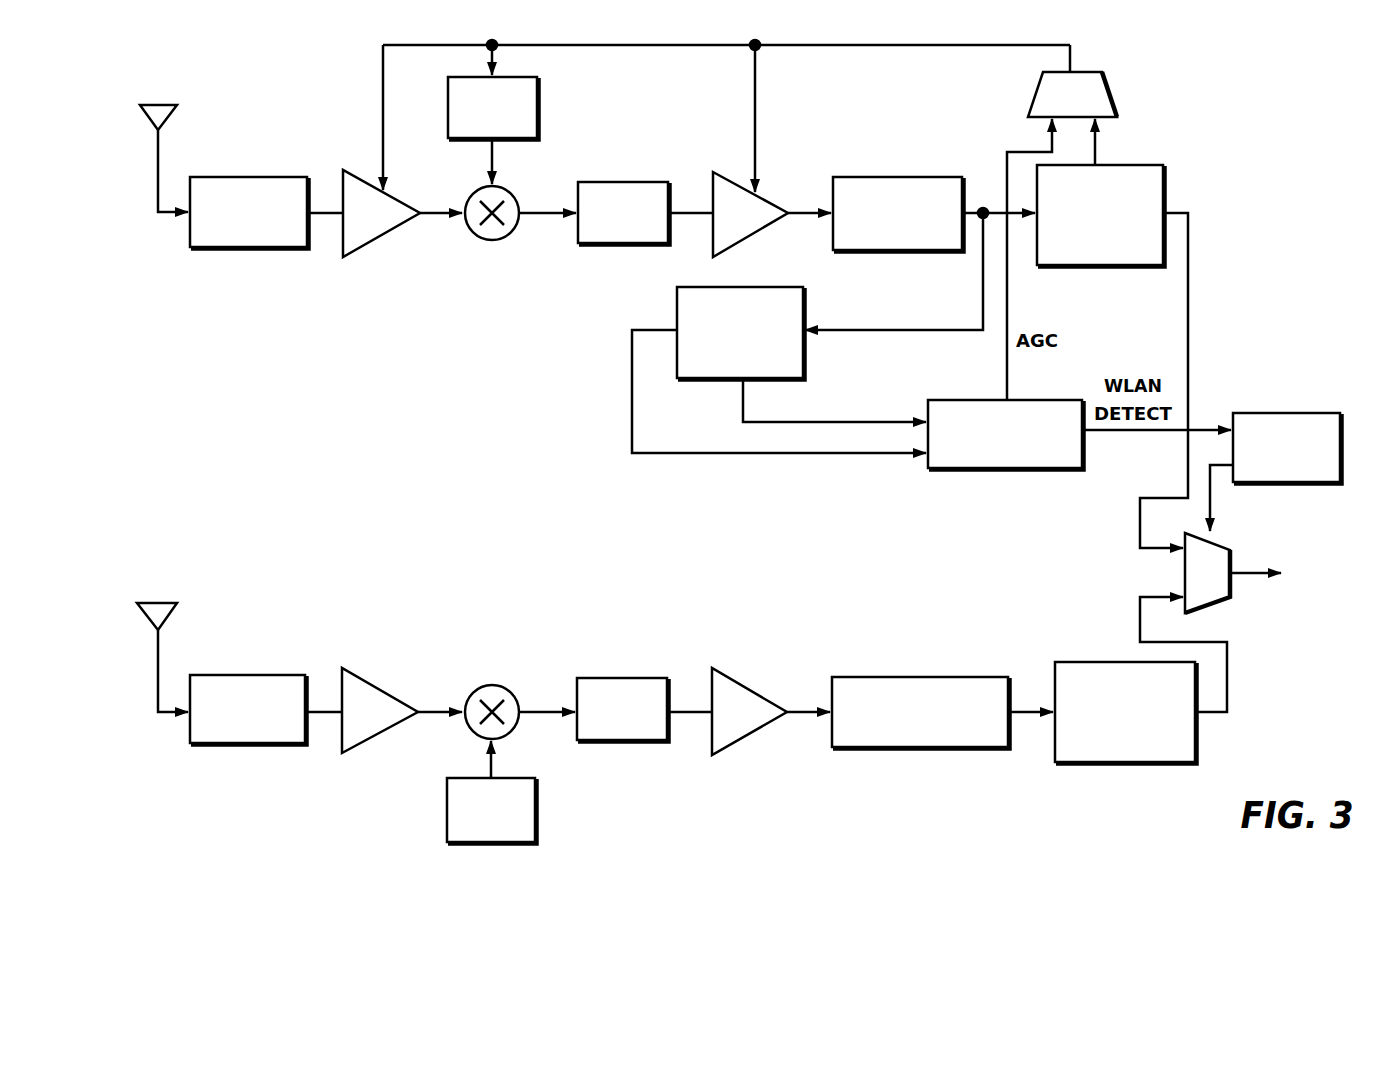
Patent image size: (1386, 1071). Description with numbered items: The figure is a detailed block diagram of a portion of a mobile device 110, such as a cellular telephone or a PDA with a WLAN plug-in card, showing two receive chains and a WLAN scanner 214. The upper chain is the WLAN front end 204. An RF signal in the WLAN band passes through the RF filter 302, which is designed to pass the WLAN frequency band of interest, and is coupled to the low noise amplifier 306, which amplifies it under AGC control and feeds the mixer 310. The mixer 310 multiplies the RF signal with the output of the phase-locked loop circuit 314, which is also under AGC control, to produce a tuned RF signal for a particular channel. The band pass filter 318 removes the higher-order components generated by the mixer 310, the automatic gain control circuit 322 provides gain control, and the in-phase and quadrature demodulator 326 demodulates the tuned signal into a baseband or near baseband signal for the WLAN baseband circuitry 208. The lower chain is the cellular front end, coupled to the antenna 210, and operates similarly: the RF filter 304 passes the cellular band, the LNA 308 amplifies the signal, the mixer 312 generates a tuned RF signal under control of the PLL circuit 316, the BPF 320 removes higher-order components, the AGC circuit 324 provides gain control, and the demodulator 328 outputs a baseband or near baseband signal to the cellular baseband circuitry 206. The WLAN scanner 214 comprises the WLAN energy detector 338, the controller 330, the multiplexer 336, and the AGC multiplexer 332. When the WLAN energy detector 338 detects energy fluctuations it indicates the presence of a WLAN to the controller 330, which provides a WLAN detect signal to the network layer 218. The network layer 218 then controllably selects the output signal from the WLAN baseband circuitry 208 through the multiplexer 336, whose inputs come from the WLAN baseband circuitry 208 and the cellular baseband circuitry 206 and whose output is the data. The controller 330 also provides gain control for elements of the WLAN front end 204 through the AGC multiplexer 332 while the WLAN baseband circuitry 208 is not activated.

The mobile device 110 is at (1309, 783).
The WLAN front end 204 is at (370, 80).
The cellular baseband circuitry 206 is at (1113, 762).
The WLAN baseband circuitry 208 is at (1163, 194).
The antenna 210 is at (167, 602).
The WLAN scanner 214 is at (848, 471).
The network layer 218 is at (1290, 413).
The RF filter 302 is at (222, 177).
The RF filter 304 is at (222, 675).
The low noise amplifier 306 is at (385, 237).
The LNA 308 is at (370, 680).
The mixer 310 is at (481, 239).
The mixer 312 is at (167, 103).
The phase-locked loop circuit 314 is at (538, 97).
The PLL circuit 316 is at (535, 805).
The band pass filter 318 is at (622, 182).
The BPF 320 is at (605, 678).
The automatic gain control circuit 322 is at (769, 200).
The AGC circuit 324 is at (745, 685).
The in-phase and quadrature demodulator 326 is at (935, 177).
The demodulator 328 is at (887, 677).
The controller 330 is at (1008, 468).
The AGC multiplexer 332 is at (1104, 75).
The multiplexer 336 is at (1185, 573).
The WLAN energy detector 338 is at (797, 303).